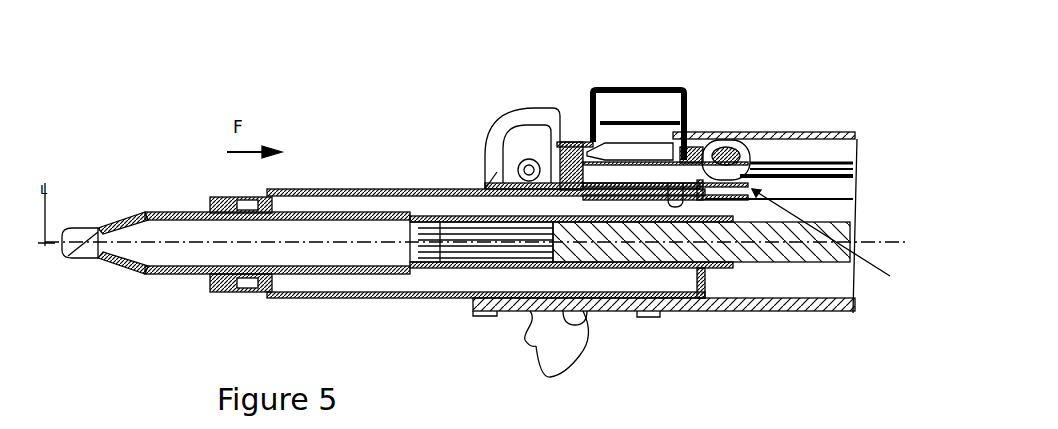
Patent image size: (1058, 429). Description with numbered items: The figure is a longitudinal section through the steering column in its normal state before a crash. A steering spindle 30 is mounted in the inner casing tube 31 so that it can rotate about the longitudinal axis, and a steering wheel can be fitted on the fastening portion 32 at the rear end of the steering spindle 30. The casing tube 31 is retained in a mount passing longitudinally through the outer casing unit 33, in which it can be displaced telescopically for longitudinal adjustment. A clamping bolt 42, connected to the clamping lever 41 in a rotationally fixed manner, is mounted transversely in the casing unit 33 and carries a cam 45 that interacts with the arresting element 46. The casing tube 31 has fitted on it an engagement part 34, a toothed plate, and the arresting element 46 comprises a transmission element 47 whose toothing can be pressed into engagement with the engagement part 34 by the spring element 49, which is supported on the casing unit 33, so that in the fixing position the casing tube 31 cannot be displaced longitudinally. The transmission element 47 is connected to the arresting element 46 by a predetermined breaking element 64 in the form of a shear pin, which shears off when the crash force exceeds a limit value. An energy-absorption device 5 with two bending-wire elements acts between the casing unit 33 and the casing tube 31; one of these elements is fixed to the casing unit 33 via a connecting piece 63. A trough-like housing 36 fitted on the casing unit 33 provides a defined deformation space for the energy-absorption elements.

The energy-absorption device 5 is at (827, 241).
The steering spindle 30 is at (180, 212).
The inner casing tube 31 is at (345, 189).
The fastening portion 32 is at (90, 240).
The outer casing unit 33 is at (783, 305).
The engagement part 34 is at (585, 200).
The housing 36 is at (800, 132).
The clamping lever 41 is at (553, 340).
The clamping bolt 42 is at (490, 165).
The cam 45 is at (513, 140).
The arresting element 46 is at (540, 150).
The transmission element 47 is at (605, 165).
The spring element 49 is at (603, 120).
The connecting piece 63 is at (720, 140).
The predetermined breaking element 64 is at (575, 140).